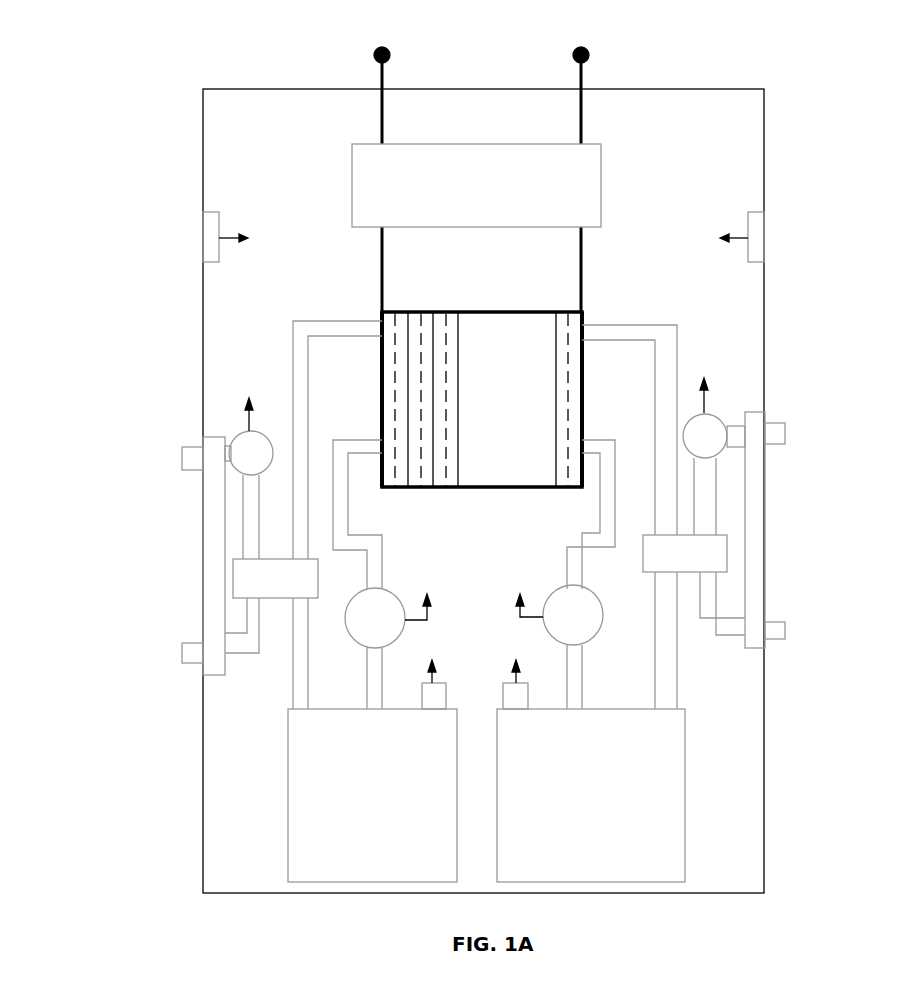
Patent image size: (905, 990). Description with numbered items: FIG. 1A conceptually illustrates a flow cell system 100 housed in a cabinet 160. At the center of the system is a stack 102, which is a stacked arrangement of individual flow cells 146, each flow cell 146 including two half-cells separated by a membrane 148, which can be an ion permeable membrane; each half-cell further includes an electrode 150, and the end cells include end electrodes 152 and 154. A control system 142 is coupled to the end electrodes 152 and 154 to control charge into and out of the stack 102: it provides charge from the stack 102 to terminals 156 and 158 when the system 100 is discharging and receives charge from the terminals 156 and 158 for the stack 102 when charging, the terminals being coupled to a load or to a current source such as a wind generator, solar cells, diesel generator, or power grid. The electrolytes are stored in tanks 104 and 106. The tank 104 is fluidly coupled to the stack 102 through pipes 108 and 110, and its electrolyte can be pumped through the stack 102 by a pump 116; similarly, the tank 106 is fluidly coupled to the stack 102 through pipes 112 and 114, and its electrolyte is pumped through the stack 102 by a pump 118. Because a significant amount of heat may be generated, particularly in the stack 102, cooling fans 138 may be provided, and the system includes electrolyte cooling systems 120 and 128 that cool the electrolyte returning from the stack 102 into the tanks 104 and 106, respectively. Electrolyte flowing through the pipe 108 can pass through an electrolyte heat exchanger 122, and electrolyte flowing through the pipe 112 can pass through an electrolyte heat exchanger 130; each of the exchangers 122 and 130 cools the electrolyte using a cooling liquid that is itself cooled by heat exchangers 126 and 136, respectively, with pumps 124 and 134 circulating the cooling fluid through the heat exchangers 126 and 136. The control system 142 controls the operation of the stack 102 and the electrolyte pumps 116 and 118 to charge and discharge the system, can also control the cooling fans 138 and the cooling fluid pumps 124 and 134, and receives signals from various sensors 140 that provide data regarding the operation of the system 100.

The flow cell system 100 is at (95, 140).
The stack 102 is at (466, 395).
The tank 104 is at (348, 793).
The tank 106 is at (566, 793).
The pipe 108 is at (306, 383).
The pipe 110 is at (350, 472).
The pipe 112 is at (677, 372).
The pipe 114 is at (612, 474).
The pump 116 is at (367, 625).
The pump 118 is at (582, 612).
The electrolyte cooling system 120 is at (226, 548).
The electrolyte heat exchanger 122 is at (293, 573).
The pump 124 is at (242, 447).
The heat exchanger 126 is at (203, 628).
The electrolyte cooling system 128 is at (730, 507).
The electrolyte heat exchanger 130 is at (677, 552).
The pump 134 is at (693, 443).
The heat exchanger 136 is at (765, 498).
The cooling fans 138 is at (206, 250).
The sensors 140 is at (507, 688).
The control system 142 is at (497, 196).
The flow cell 146 is at (458, 322).
The membrane 148 is at (445, 474).
The electrode 150 is at (458, 397).
The end electrode 152 is at (380, 422).
The end electrode 154 is at (585, 420).
The terminal 156 is at (375, 50).
The terminal 158 is at (573, 50).
The cabinet 160 is at (765, 125).